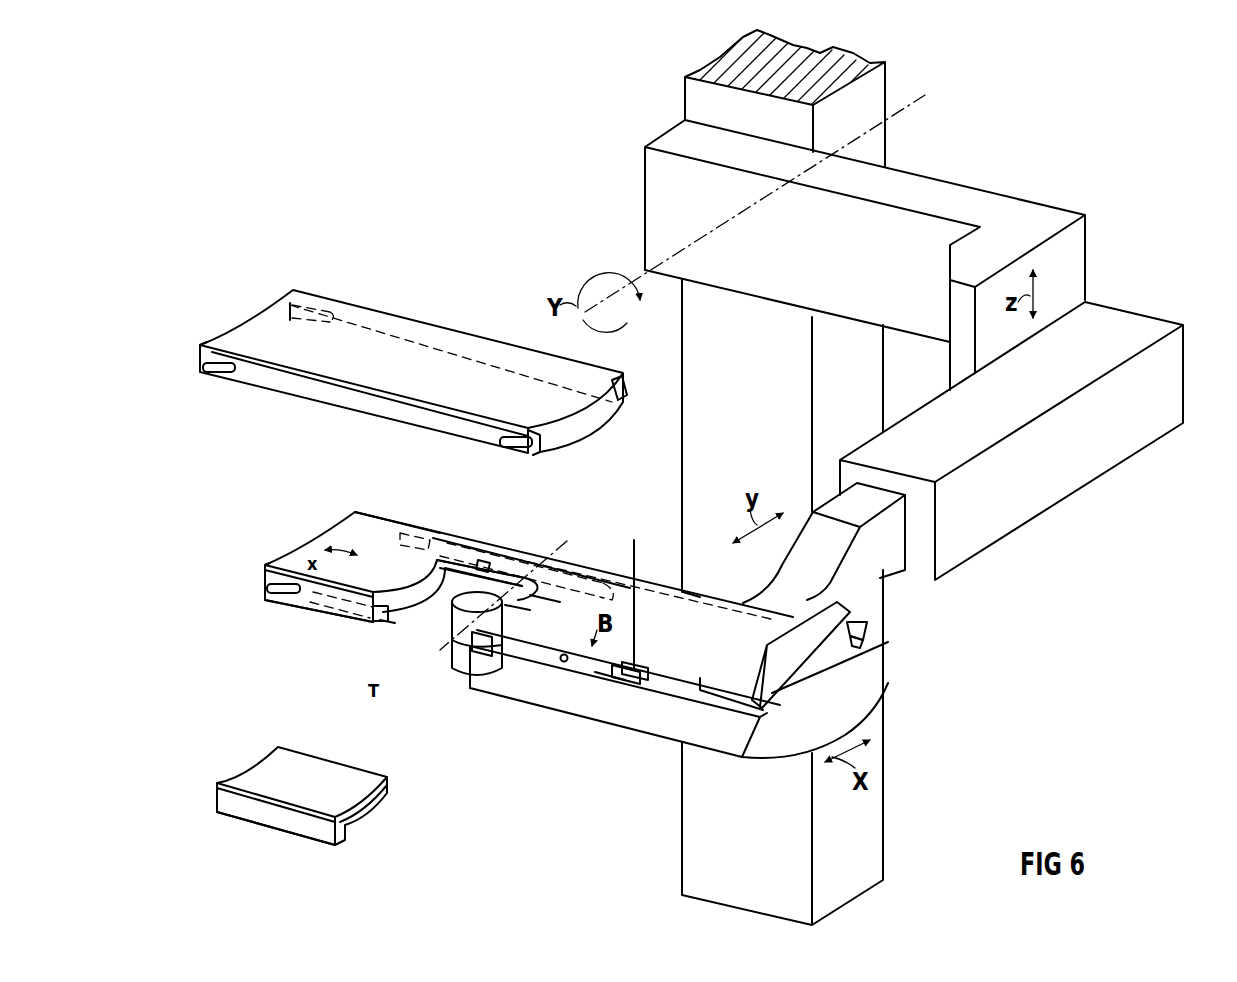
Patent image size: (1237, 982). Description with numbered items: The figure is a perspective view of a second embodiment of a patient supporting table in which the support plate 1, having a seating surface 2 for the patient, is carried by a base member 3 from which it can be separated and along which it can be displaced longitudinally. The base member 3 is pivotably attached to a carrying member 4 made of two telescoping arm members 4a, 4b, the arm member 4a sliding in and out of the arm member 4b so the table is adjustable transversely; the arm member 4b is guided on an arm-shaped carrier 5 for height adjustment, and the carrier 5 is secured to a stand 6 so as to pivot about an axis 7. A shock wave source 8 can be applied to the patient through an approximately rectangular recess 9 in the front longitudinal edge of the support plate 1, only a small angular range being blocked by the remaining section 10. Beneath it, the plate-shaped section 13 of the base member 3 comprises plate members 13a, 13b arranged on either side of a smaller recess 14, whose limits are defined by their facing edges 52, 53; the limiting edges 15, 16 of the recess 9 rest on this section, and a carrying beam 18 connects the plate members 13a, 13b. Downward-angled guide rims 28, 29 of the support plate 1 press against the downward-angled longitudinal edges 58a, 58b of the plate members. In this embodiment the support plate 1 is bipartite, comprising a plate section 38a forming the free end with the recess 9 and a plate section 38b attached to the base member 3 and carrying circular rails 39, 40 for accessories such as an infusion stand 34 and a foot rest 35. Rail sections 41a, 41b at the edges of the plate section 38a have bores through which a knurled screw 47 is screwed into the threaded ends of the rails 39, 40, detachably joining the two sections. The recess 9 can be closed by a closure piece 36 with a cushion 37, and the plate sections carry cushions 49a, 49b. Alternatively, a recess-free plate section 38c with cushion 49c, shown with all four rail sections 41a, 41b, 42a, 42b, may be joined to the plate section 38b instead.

The support plate 1 is at (675, 582).
The seating surface 2 is at (378, 520).
The base member 3 is at (612, 718).
The carrying member 4 is at (963, 461).
The arm member 4a is at (873, 580).
The arm member 4b is at (1112, 452).
The arm-shaped carrier 5 is at (993, 196).
The stand 6 is at (872, 150).
The axis 7 is at (640, 292).
The shock wave source 8 is at (463, 657).
The recess 9 is at (503, 572).
The section of the support plate 10 is at (520, 575).
The plate-shaped section 13 is at (413, 600).
The plate member 13a is at (375, 613).
The plate member 13b is at (480, 658).
The recess 14 is at (556, 560).
The limiting edge 15 is at (430, 546).
The limiting edge 16 is at (558, 616).
The carrying beam 18 is at (483, 560).
The guide rim 28 is at (272, 605).
The guide rim 29 is at (452, 533).
The infusion stand 34 is at (642, 530).
The foot rest 35 is at (862, 626).
The closure piece 36 is at (370, 812).
The cushion 37 is at (382, 800).
The plate section 38a is at (345, 532).
The plate section 38b is at (715, 612).
The plate section 38c is at (424, 357).
The rail 39 is at (688, 688).
The rail 40 is at (865, 648).
The rail section 41a is at (220, 375).
The rail section 41b is at (527, 457).
The rail section 42a is at (318, 305).
The rail section 42b is at (625, 393).
The knurled screw 47 is at (565, 662).
The cushion 49a is at (265, 570).
The cushion 49b is at (672, 672).
The cushion 49c is at (203, 342).
The edge 52 is at (410, 643).
The edge 53 is at (518, 615).
The longitudinal edge 58a is at (393, 623).
The longitudinal edge 58b is at (483, 650).